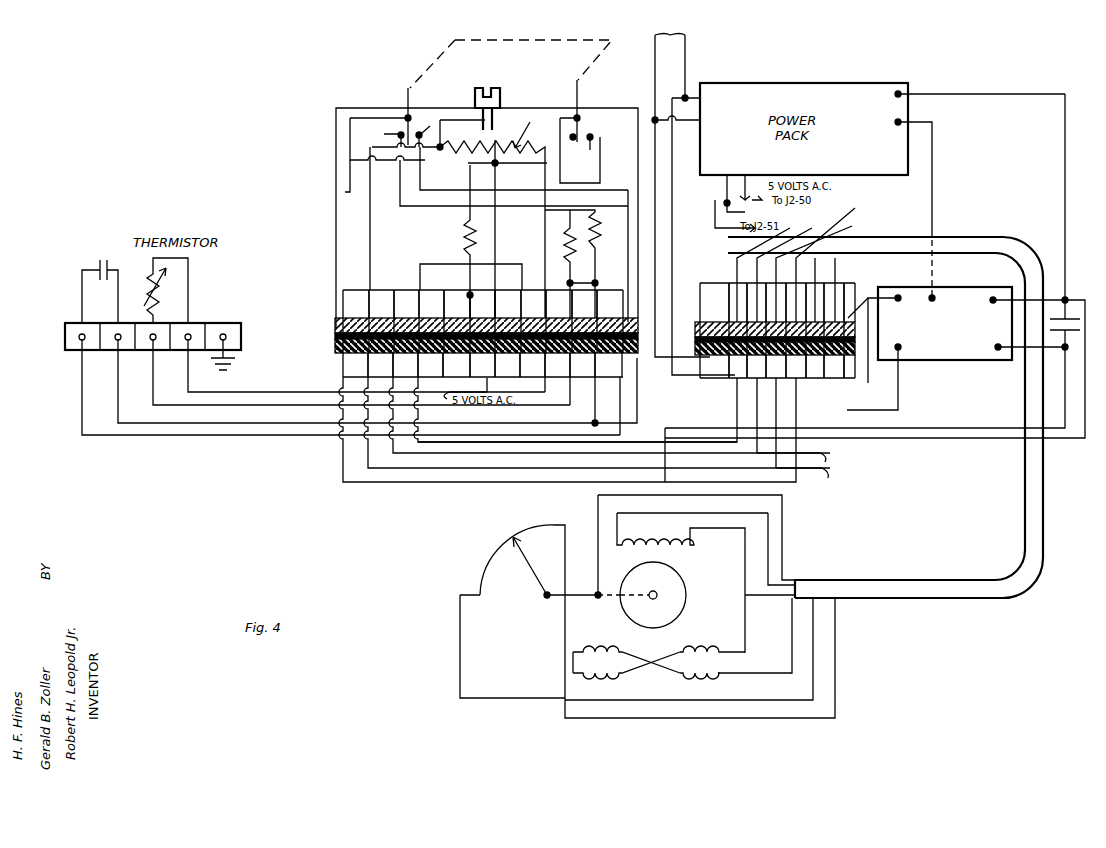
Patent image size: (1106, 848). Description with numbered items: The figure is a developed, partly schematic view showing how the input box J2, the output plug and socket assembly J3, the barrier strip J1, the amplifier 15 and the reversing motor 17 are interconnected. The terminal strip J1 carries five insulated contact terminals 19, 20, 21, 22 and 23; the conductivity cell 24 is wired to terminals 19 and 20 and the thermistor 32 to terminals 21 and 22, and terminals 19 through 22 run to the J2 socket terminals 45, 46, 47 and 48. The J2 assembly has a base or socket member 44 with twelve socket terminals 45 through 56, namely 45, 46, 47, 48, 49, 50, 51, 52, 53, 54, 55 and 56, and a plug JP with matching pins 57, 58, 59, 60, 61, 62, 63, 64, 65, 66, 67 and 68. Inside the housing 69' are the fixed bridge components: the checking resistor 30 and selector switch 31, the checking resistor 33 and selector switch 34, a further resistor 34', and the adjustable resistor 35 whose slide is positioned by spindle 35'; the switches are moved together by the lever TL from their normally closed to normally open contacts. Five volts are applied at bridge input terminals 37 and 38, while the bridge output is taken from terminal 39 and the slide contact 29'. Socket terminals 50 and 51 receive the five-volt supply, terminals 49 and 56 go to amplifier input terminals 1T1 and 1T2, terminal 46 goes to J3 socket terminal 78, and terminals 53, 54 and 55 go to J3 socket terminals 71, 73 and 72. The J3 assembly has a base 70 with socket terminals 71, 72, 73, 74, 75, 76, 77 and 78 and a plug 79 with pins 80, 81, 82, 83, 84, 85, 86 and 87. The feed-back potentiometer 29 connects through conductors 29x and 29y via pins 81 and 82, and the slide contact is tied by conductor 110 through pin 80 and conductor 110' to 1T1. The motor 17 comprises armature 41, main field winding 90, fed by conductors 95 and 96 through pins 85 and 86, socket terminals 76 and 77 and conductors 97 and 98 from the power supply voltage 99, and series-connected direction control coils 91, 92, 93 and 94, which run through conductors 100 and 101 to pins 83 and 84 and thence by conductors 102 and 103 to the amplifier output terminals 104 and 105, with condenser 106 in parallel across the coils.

The barrier or terminal strip J1 is at (128, 336).
The contact terminal 19 is at (73, 352).
The contact terminal 20 is at (112, 352).
The contact terminal 21 is at (147, 352).
The contact terminal 22 is at (182, 352).
The contact terminal 23 is at (236, 348).
The conductivity cell 24 is at (104, 262).
The thermistor 32 is at (146, 288).
The case or housing 69' is at (463, 219).
The lever TL is at (560, 42).
The input box J2 is at (497, 69).
The selector switch 31 is at (410, 94).
The selector switch 34 is at (587, 131).
The spindle 35' is at (489, 101).
The adjustable resistor 35 is at (491, 135).
The bridge input terminal 38 is at (492, 165).
The resistor 34' is at (455, 241).
The calibrated or checking resistor 33 is at (566, 246).
The calibrated or checking resistor 30 is at (597, 238).
The bridge output terminal 39 is at (600, 288).
The bridge input terminal 37 is at (468, 292).
The plug JP is at (335, 327).
The contact pin 68 is at (336, 312).
The base or socket member 44 is at (335, 344).
The socket terminal 56 is at (336, 356).
The contact pin 67 is at (356, 304).
The contact pin 66 is at (381, 304).
The contact pin 65 is at (406, 304).
The contact pin 64 is at (431, 304).
The contact pin 63 is at (457, 304).
The contact pin 62 is at (482, 304).
The contact pin 61 is at (508, 304).
The contact pin 60 is at (533, 304).
The contact pin 59 is at (559, 304).
The contact pin 58 is at (584, 304).
The contact pin 57 is at (610, 304).
The socket terminal 55 is at (567, 417).
The socket terminal 54 is at (597, 410).
The socket terminal 53 is at (609, 403).
The socket terminal 52 is at (575, 397).
The socket terminal 51 is at (456, 365).
The socket terminal 50 is at (482, 365).
The socket terminal 49 is at (507, 365).
The socket terminal 48 is at (532, 372).
The socket terminal 47 is at (557, 379).
The socket terminal 46 is at (603, 389).
The socket terminal 45 is at (608, 394).
The power supply voltage 99 is at (680, 183).
The conductor 98 is at (703, 235).
The conductor 97 is at (660, 210).
The conductor 29x is at (946, 206).
The conductor 29y is at (895, 214).
The output plug and socket assembly J3 is at (716, 290).
The plug 79 is at (700, 310).
The base or socket member 70 is at (700, 343).
The terminal pin 87 is at (714, 302).
The terminal pin 86 is at (759, 275).
The terminal pin 85 is at (779, 275).
The terminal pin 84 is at (809, 274).
The terminal pin 83 is at (820, 265).
The terminal pin 82 is at (815, 290).
The terminal pin 81 is at (834, 290).
The terminal pin 80 is at (859, 302).
The conductor 96 is at (790, 230).
The conductor 95 is at (733, 542).
The conductor 100 is at (745, 610).
The conductor 101 is at (787, 634).
The conductor 110 is at (697, 365).
The conductor 110' is at (860, 389).
The socket terminal 78 is at (710, 368).
The socket terminal 77 is at (738, 366).
The socket terminal 76 is at (756, 366).
The socket terminal 75 is at (776, 366).
The socket terminal 74 is at (796, 366).
The socket terminal 73 is at (815, 366).
The socket terminal 72 is at (834, 366).
The socket terminal 71 is at (853, 366).
The amplifier 15 is at (952, 355).
The amplifier input terminal 1T1 is at (920, 283).
The amplifier output terminal 105 is at (996, 298).
The amplifier input terminal 1T2 is at (902, 352).
The amplifier output terminal 104 is at (1000, 350).
The condenser 106 is at (1068, 310).
The conductor 102 is at (908, 428).
The conductor 103 is at (885, 440).
The feed-back potentiometer resistor 29 is at (622, 615).
The slide contact 29' is at (544, 567).
The armature 41 is at (686, 597).
The reversing motor 17 is at (654, 643).
The main field winding 90 is at (670, 535).
The rotation direction control field coil winding 94 is at (608, 650).
The rotation direction control field coil winding 92 is at (612, 688).
The rotation direction control field coil winding 91 is at (714, 650).
The rotation direction control field coil winding 93 is at (714, 688).